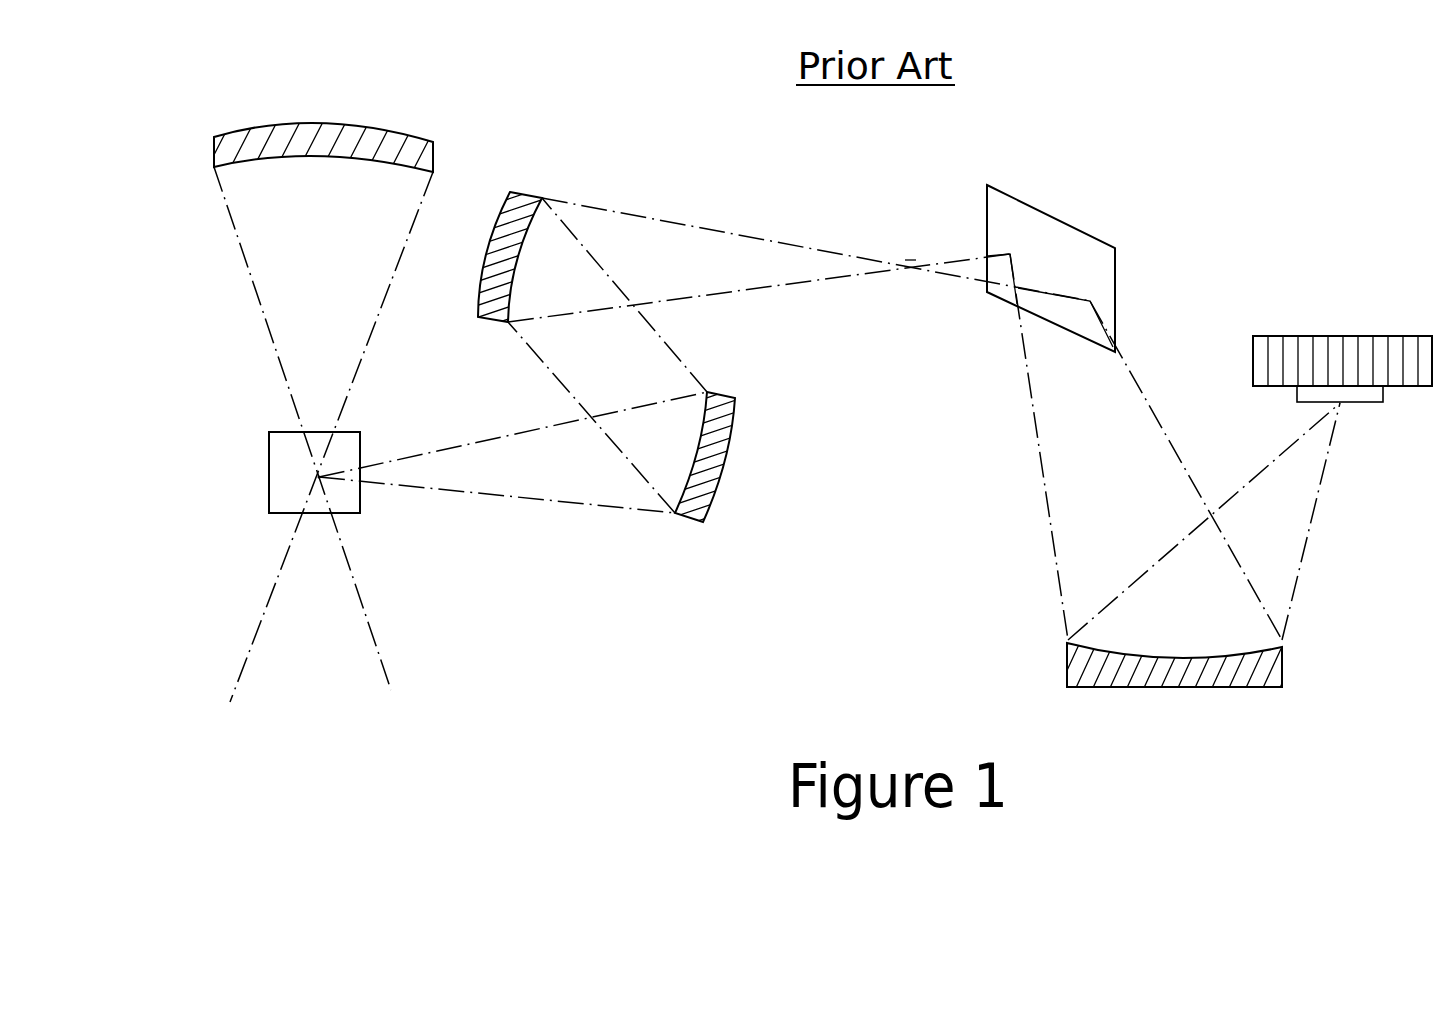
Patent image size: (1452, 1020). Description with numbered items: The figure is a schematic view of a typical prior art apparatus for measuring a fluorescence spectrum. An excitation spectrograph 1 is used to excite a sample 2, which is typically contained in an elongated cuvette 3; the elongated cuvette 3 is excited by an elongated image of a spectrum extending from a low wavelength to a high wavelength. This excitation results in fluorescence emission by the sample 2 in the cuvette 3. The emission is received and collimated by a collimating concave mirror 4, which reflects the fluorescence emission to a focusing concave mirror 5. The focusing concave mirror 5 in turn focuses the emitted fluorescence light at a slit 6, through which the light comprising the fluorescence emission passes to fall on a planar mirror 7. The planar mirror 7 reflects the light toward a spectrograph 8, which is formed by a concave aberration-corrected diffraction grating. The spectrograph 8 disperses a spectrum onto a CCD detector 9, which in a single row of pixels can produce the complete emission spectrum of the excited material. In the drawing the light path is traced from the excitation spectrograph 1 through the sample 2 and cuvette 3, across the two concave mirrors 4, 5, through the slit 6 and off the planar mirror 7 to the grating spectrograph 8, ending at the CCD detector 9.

The excitation spectrograph 1 is at (214, 153).
The sample 2 is at (319, 478).
The elongated cuvette 3 is at (305, 528).
The collimating concave mirror 4 is at (705, 522).
The focusing concave mirror 5 is at (510, 188).
The slit 6 is at (910, 258).
The planar mirror 7 is at (1052, 217).
The spectrograph 8 is at (1175, 688).
The CCD detector 9 is at (1353, 406).